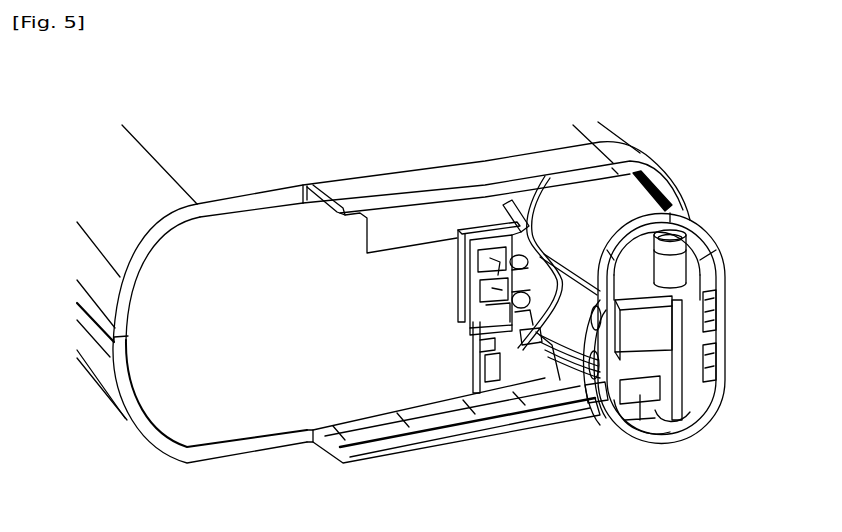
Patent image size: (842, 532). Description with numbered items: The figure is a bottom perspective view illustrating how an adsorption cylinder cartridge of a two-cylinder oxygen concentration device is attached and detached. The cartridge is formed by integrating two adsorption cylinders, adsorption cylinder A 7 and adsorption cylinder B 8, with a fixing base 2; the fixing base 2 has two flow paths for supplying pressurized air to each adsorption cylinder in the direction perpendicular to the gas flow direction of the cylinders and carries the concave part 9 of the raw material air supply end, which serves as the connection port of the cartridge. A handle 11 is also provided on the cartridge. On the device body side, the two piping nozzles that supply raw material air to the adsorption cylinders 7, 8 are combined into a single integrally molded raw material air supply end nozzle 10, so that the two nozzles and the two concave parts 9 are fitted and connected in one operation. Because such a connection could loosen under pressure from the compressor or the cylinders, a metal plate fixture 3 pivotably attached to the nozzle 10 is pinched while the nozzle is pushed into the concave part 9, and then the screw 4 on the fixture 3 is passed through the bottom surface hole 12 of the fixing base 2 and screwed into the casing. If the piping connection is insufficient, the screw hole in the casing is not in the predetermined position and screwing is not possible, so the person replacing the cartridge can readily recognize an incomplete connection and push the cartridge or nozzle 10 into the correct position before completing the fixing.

The fixing base 2 is at (700, 227).
The metal plate fixture 3 is at (457, 238).
The screw 4 is at (527, 337).
The adsorption cylinder A 7 is at (567, 333).
The adsorption cylinder B 8 is at (618, 208).
The concave part of raw material air supply end 9 is at (600, 397).
The raw material air supply end nozzle 10 is at (512, 255).
The handle 11 is at (720, 370).
The bottom surface hole of fixing base 12 is at (727, 307).